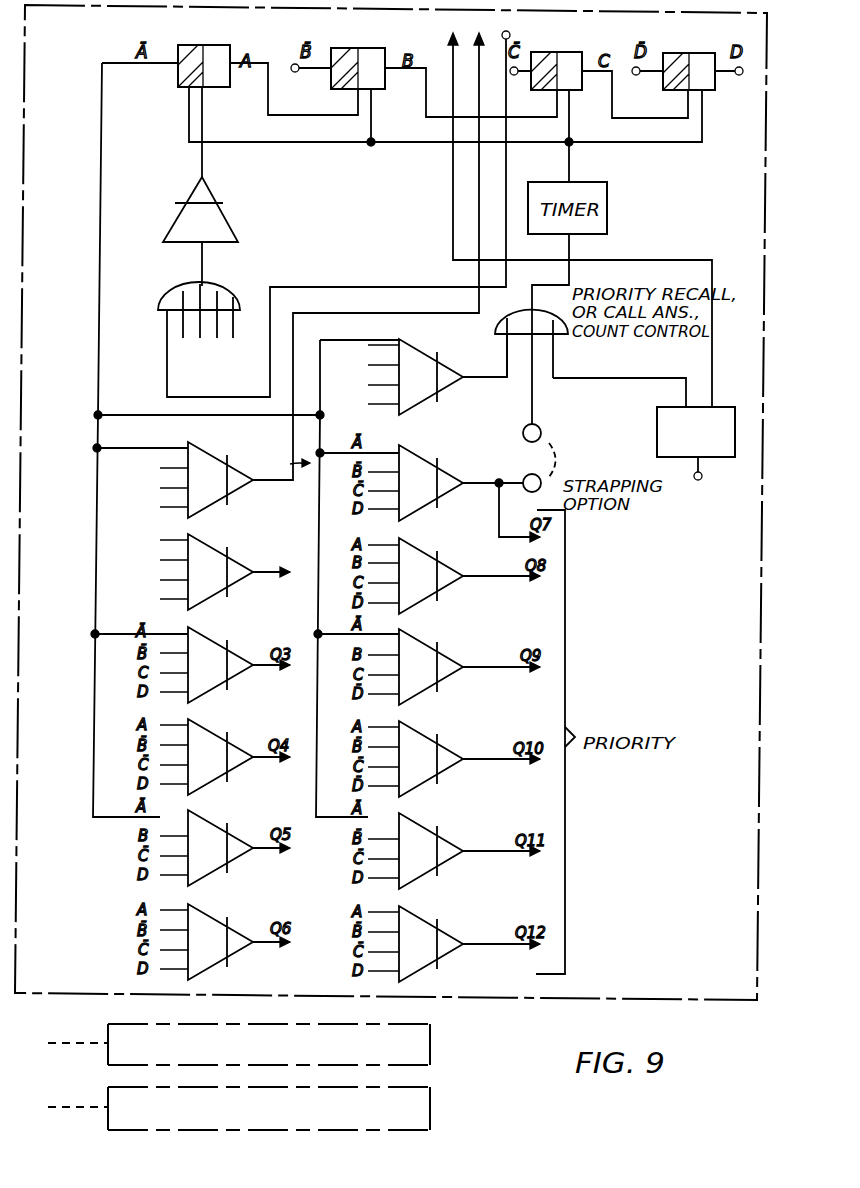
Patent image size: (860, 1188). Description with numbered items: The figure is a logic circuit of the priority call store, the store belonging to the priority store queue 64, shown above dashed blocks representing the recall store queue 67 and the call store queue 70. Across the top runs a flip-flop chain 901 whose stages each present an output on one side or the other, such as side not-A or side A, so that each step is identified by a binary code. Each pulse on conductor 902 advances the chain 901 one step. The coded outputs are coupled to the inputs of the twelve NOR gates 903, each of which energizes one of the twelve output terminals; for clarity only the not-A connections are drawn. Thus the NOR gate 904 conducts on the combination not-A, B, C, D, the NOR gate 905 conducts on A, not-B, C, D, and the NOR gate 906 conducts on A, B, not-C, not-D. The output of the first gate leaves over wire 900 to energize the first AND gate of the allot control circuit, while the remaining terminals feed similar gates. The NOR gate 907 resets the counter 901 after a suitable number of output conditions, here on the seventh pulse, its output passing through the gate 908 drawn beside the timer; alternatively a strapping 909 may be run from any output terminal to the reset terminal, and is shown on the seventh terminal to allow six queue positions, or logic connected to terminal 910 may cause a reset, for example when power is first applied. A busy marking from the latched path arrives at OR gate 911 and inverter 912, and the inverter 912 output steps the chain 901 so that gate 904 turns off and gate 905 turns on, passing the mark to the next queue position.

The wire 900 is at (454, 313).
The flip-flop chain 901 is at (176, 88).
The conductor 902 is at (203, 158).
The NOR gates 903 is at (240, 468).
The NOR gate 904 is at (218, 506).
The NOR gate 905 is at (214, 598).
The NOR gate 906 is at (494, 62).
The NOR gate 907 is at (436, 353).
The OR gate 908 is at (531, 344).
The strapping 909 is at (541, 438).
The terminal 910 is at (702, 481).
The OR gate 911 is at (243, 279).
The inverter 912 is at (225, 210).
The priority store queue 64 is at (732, 981).
The recall store queue 67 is at (432, 1050).
The call store queue 70 is at (432, 1113).